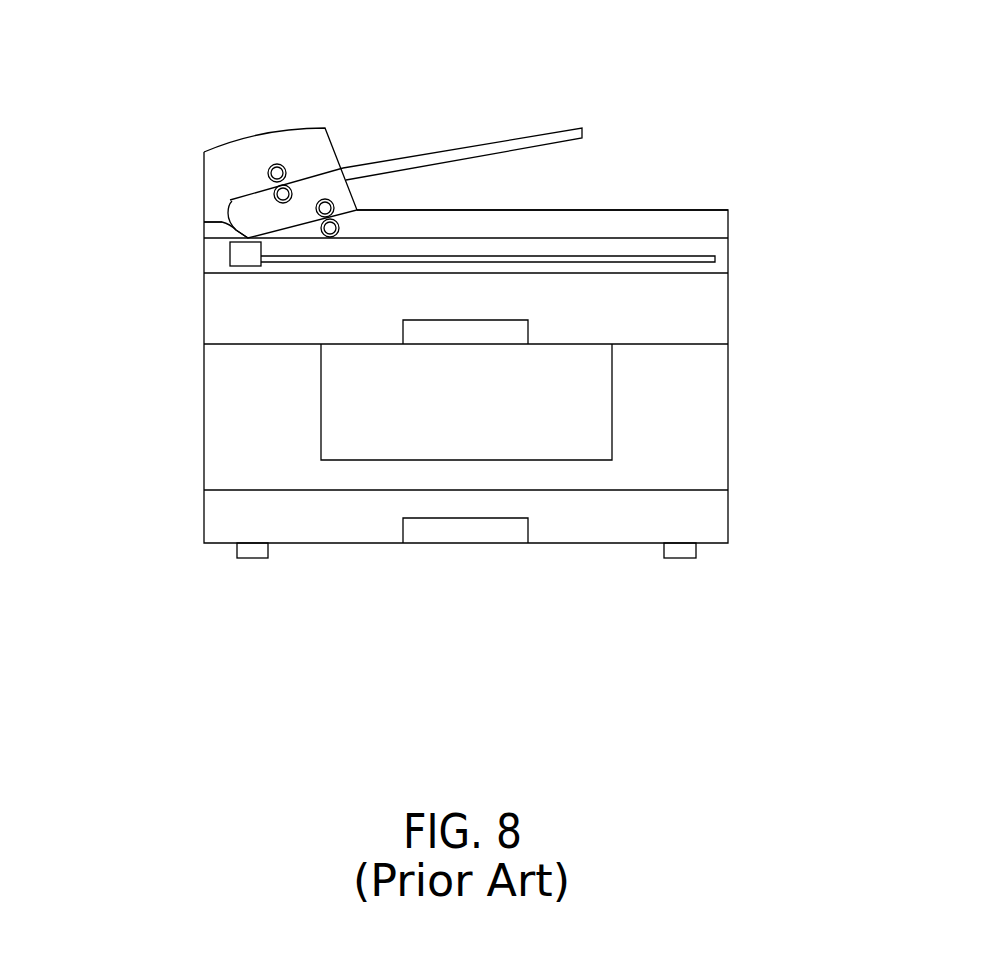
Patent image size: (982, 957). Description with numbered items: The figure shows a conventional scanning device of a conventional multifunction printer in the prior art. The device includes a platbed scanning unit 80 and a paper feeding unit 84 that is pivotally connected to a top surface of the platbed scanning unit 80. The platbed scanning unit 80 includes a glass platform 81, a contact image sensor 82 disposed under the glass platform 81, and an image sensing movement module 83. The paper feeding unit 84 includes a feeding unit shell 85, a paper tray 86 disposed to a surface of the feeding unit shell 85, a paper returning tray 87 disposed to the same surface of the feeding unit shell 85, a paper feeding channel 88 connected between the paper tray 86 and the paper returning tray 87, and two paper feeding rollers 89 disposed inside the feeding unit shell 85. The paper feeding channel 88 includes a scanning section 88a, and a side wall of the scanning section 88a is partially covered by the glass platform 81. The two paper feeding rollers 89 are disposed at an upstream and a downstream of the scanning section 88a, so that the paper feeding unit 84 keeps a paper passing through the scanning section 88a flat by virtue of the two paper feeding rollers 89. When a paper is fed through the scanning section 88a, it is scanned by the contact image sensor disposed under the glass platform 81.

The platbed scanning unit 80 is at (439, 297).
The glass platform 81 is at (677, 237).
The contact image sensor 82 is at (242, 254).
The image sensing movement module 83 is at (302, 262).
The paper feeding unit 84 is at (323, 137).
The feeding unit shell 85 is at (327, 128).
The paper tray 86 is at (407, 153).
The paper returning tray 87 is at (440, 209).
The paper feeding channel 88 is at (203, 197).
The scanning section 88a is at (203, 222).
The paper feeding rollers 89 is at (270, 165).